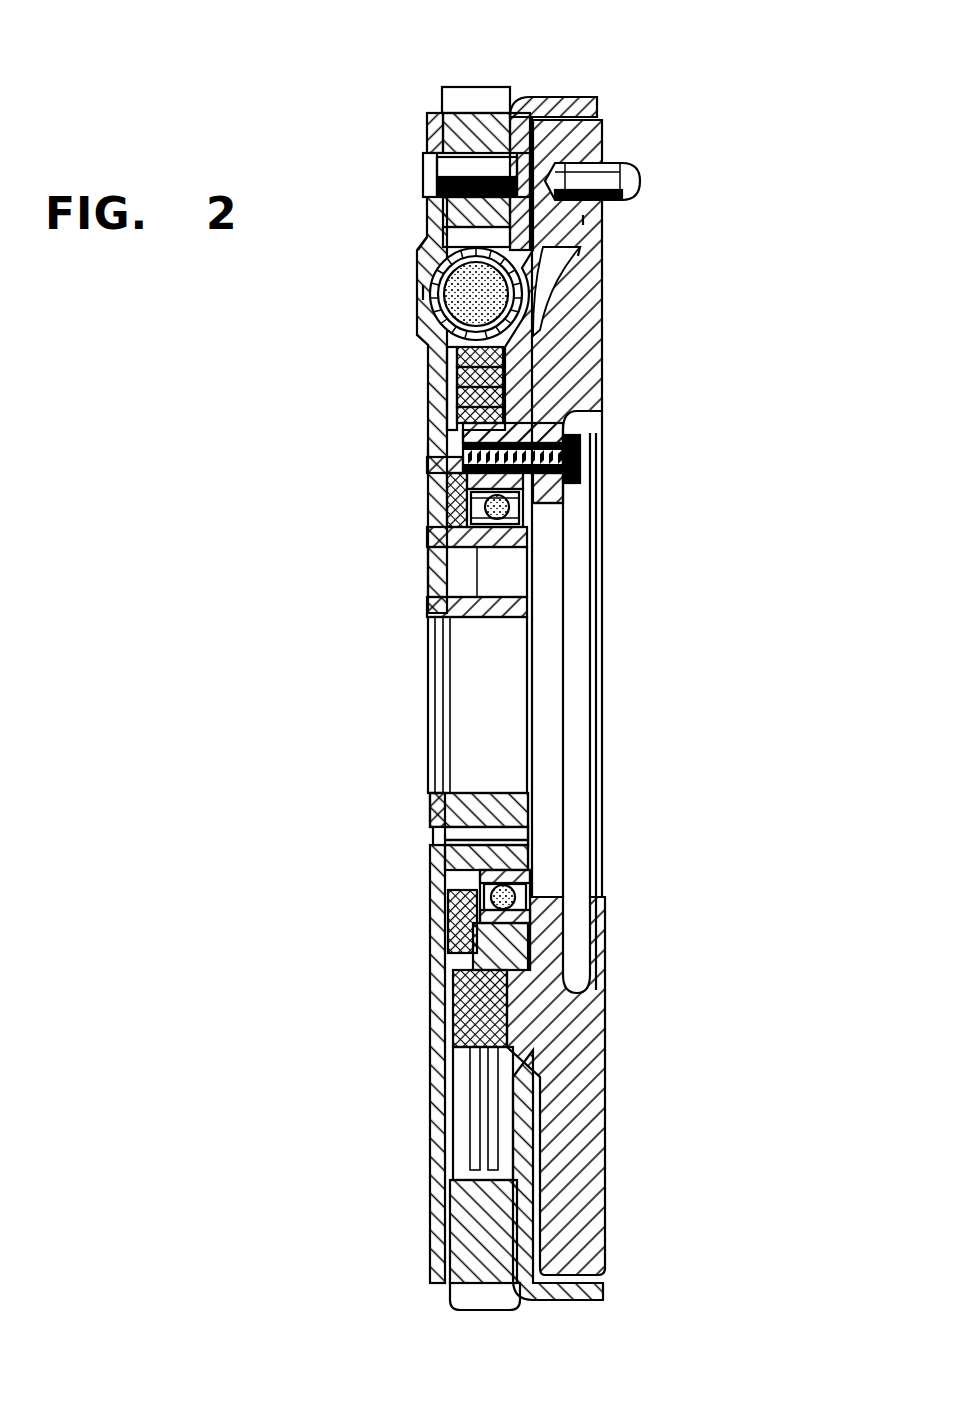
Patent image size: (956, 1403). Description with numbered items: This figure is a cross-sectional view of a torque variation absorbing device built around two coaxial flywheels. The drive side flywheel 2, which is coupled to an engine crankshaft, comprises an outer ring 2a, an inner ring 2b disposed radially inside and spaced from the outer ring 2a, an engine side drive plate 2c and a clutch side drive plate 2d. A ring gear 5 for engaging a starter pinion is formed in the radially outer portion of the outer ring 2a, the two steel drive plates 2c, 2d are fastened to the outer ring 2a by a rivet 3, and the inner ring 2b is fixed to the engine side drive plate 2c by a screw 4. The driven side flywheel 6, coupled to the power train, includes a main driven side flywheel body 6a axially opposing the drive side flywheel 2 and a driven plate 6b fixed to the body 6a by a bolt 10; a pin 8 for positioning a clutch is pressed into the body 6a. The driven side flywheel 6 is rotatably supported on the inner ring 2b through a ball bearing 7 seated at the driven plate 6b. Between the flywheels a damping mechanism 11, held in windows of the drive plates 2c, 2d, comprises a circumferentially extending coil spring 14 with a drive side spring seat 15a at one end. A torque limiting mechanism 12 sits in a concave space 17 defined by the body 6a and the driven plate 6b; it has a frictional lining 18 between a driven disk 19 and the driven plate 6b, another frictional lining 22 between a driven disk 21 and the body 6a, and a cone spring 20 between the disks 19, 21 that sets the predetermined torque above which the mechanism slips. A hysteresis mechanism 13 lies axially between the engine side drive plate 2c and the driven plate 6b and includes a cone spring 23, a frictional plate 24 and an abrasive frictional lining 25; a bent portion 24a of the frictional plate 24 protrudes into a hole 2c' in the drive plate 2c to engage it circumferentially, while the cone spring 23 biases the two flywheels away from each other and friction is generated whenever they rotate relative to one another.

The drive side flywheel 2 is at (425, 113).
The outer ring 2a is at (455, 207).
The inner ring 2b is at (515, 617).
The engine side drive plate 2c is at (401, 124).
The hole 2c' is at (385, 432).
The clutch side drive plate 2d is at (565, 96).
The rivet 3 is at (447, 170).
The screw 4 is at (436, 835).
The ring gear 5 is at (470, 97).
The driven side flywheel 6 is at (602, 130).
The main driven side flywheel body 6a is at (583, 220).
The driven plate 6b is at (580, 443).
The ball bearing 7 is at (537, 527).
The pin 8 is at (612, 165).
The bolt 10 is at (590, 527).
The damping mechanism 11 is at (424, 290).
The torque limiting mechanism 12 is at (448, 380).
The hysteresis mechanism 13 is at (421, 492).
The coil spring 14 is at (426, 307).
The drive side spring seat 15a is at (455, 292).
The concave space 17 is at (578, 256).
The frictional lining 18 is at (530, 345).
The driven disk 19 is at (505, 378).
The cone spring 20 is at (505, 398).
The driven disk 21 is at (505, 418).
The frictional lining 22 is at (572, 443).
The cone spring 23 is at (447, 496).
The frictional plate 24 is at (440, 528).
The bent portion of frictional plate 24a is at (430, 463).
The frictional lining 25 is at (460, 547).